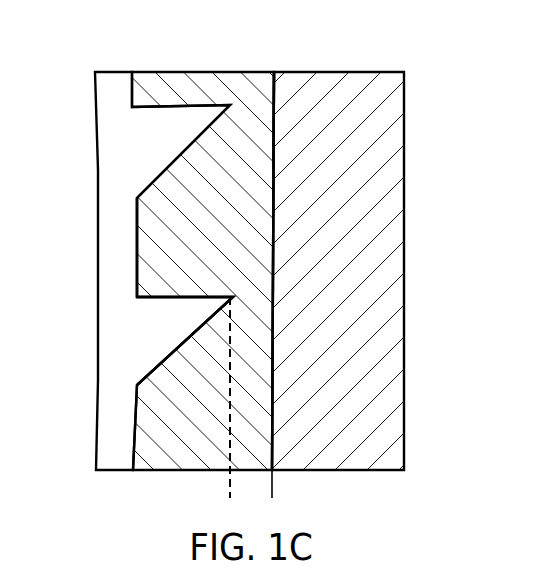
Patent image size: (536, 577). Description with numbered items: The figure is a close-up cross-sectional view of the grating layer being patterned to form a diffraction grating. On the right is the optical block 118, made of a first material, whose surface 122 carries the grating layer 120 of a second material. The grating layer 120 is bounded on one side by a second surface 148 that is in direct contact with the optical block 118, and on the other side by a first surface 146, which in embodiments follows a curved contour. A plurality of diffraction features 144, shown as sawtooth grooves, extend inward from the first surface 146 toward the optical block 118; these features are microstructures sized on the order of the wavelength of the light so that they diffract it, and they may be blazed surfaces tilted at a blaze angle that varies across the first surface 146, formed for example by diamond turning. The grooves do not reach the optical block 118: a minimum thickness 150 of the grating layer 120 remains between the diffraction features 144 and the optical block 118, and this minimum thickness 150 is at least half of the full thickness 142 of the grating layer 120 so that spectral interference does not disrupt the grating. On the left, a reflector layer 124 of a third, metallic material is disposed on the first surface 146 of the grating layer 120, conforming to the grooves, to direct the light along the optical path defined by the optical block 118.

The optical block 118 is at (395, 172).
The grating layer 120 is at (198, 82).
The surface of the optical block 122 is at (275, 137).
The reflector layer 124 is at (118, 402).
The thickness of the grating layer 142 is at (137, 222).
The diffraction features 144 is at (136, 324).
The first surface of the grating layer 146 is at (137, 250).
The second surface of the grating layer 148 is at (269, 88).
The minimum thickness 150 is at (300, 493).